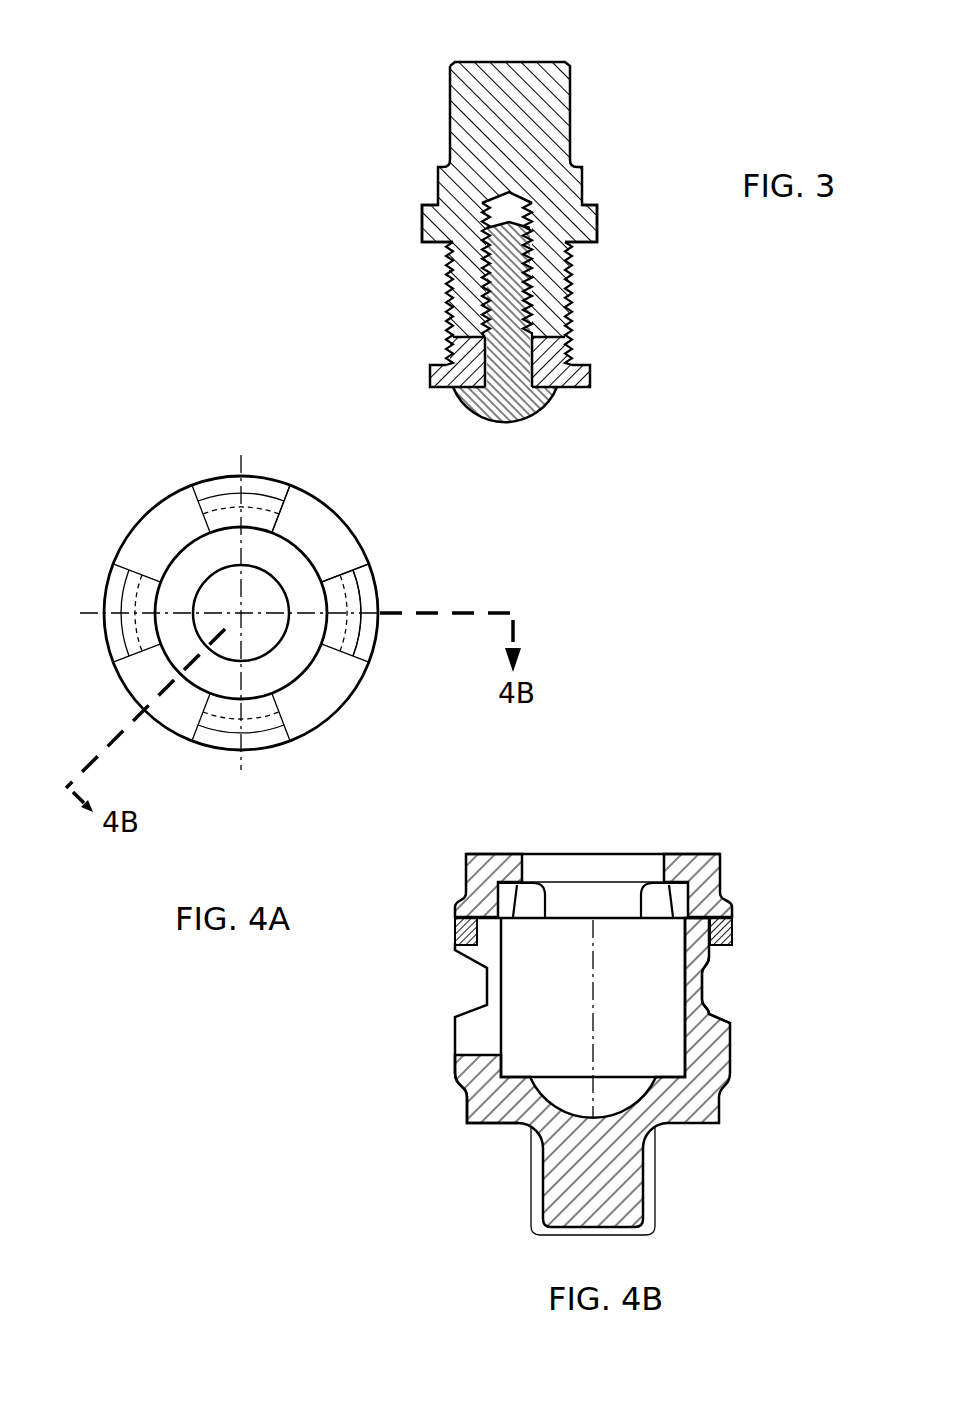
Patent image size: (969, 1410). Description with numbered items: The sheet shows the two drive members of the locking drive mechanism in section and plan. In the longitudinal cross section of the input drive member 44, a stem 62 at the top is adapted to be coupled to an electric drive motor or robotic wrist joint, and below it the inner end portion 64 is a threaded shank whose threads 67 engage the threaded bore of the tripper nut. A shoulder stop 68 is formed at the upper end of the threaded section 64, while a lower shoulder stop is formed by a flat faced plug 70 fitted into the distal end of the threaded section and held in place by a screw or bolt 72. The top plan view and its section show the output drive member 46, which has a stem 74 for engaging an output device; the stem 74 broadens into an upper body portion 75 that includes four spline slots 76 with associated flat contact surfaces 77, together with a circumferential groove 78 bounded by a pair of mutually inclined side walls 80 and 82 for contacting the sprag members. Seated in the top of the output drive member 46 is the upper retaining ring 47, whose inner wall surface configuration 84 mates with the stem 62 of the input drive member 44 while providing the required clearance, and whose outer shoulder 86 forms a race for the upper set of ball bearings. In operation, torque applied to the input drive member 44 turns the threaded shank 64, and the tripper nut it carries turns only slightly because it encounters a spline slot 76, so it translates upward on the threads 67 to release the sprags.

In FIG. 3, the input drive member 44 is at (632, 136).
In FIG. 3, the stem 62 is at (488, 75).
In FIG. 3, the threaded inner end portion 64 is at (552, 305).
In FIG. 3, the threads 67 is at (463, 293).
In FIG. 3, the shoulder stop 68 is at (588, 242).
In FIG. 3, the flat faced plug 70 is at (577, 373).
In FIG. 3, the screw or bolt 72 is at (523, 422).
In FIG. 4A, the output drive member 46 is at (305, 667).
In FIG. 4B, the output drive member 46 is at (458, 1137).
In FIG. 4A, the upper retaining ring 47 is at (275, 492).
In FIG. 4B, the upper retaining ring 47 is at (690, 853).
In FIG. 4B, the stem 74 is at (536, 1222).
In FIG. 4B, the upper body portion 75 is at (458, 1073).
In FIG. 4A, the spline slots 76 is at (337, 538).
In FIG. 4A, the flat contact surfaces 77 is at (300, 492).
In FIG. 4B, the flat contact surfaces 77 is at (474, 1012).
In FIG. 4A, the circumferential groove 78 is at (368, 632).
In FIG. 4B, the circumferential groove 78 is at (725, 987).
In FIG. 4B, the inclined side wall 80 is at (463, 962).
In FIG. 4B, the inclined side wall 82 is at (487, 1000).
In FIG. 4A, the inner wall surface configuration 84 is at (205, 578).
In FIG. 4B, the inner wall surface configuration 84 is at (583, 855).
In FIG. 4B, the outer shoulder 86 is at (477, 893).